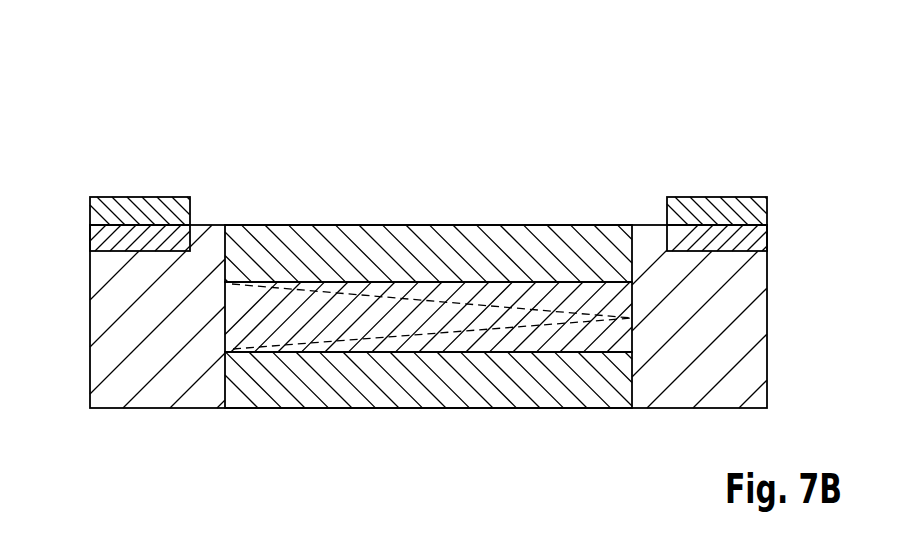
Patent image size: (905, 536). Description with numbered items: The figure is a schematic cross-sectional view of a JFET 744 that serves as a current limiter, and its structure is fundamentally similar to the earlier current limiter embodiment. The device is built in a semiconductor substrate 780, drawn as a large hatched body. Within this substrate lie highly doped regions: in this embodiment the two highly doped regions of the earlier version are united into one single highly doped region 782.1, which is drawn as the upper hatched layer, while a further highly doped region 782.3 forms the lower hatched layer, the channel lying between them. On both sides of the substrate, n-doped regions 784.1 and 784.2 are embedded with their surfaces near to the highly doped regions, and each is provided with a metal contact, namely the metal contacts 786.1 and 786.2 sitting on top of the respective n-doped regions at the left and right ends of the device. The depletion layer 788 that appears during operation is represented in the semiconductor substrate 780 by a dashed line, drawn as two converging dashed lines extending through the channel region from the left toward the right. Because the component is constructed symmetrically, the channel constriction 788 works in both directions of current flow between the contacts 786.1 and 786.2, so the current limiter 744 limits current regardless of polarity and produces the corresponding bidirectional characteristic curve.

The JFET 744 is at (731, 115).
The semiconductor substrate 780 is at (690, 390).
The highly doped region 782.1 is at (427, 233).
The highly doped region 782.3 is at (425, 398).
The n-doped region 784.1 is at (102, 233).
The n-doped region 784.2 is at (757, 235).
The metal contact 786.1 is at (138, 202).
The metal contact 786.2 is at (715, 202).
The depletion layer 788 is at (597, 340).